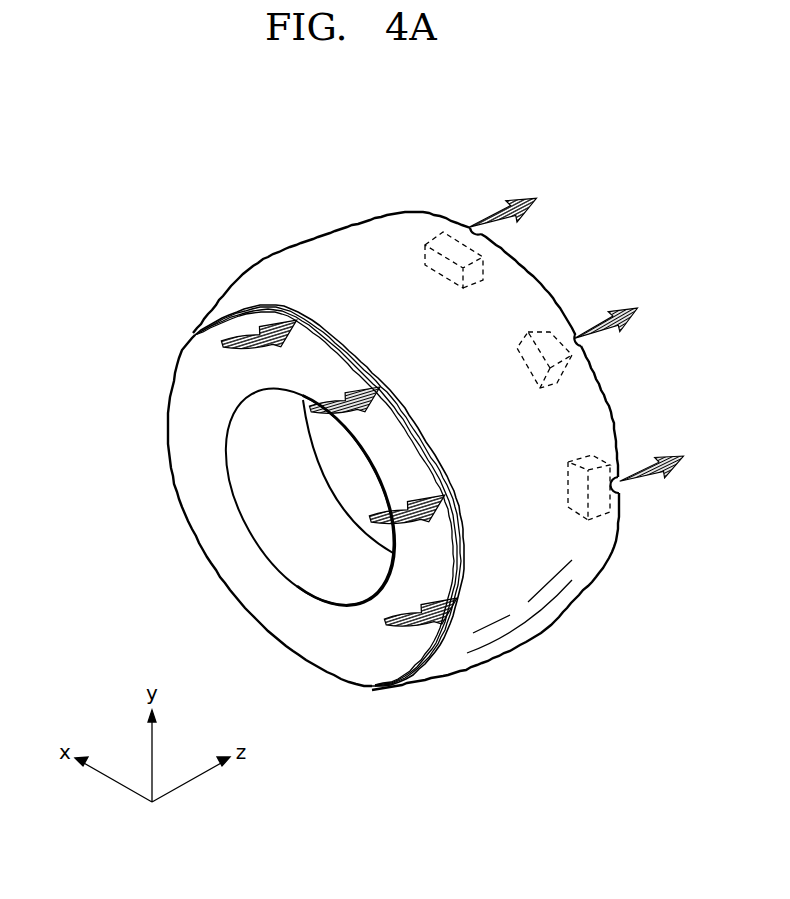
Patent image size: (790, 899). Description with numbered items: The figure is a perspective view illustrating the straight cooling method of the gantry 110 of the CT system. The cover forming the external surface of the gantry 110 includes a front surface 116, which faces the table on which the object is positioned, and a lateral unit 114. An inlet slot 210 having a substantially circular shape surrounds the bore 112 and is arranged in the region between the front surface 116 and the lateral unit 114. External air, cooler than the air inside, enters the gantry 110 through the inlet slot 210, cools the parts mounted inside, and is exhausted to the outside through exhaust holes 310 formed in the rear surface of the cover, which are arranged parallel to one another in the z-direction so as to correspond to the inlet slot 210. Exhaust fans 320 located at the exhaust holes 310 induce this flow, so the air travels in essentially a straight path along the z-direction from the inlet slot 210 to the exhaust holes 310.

The gantry 110 is at (180, 266).
The bore 112 is at (290, 513).
The lateral unit 114 is at (355, 252).
The front surface 116 is at (371, 658).
The inlet slot 210 is at (323, 327).
The exhaust holes 310 is at (472, 238).
The exhaust fans 320 is at (486, 262).